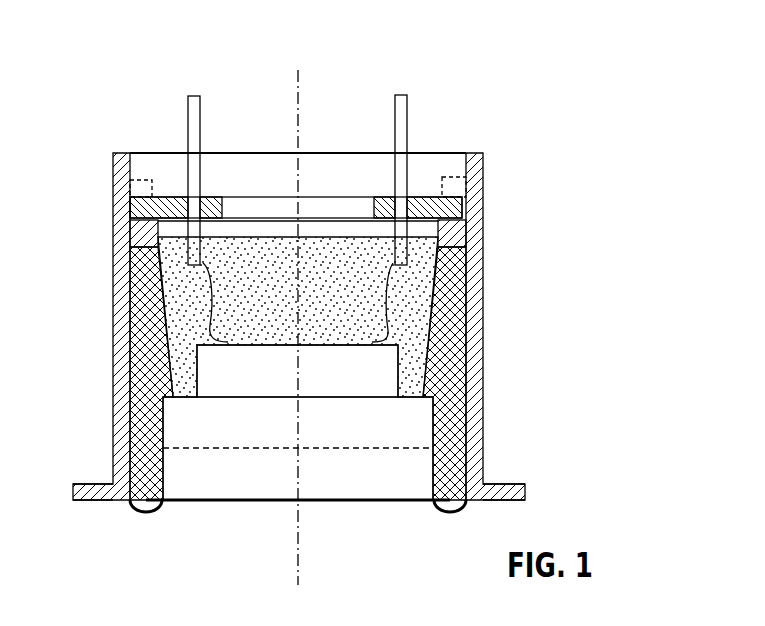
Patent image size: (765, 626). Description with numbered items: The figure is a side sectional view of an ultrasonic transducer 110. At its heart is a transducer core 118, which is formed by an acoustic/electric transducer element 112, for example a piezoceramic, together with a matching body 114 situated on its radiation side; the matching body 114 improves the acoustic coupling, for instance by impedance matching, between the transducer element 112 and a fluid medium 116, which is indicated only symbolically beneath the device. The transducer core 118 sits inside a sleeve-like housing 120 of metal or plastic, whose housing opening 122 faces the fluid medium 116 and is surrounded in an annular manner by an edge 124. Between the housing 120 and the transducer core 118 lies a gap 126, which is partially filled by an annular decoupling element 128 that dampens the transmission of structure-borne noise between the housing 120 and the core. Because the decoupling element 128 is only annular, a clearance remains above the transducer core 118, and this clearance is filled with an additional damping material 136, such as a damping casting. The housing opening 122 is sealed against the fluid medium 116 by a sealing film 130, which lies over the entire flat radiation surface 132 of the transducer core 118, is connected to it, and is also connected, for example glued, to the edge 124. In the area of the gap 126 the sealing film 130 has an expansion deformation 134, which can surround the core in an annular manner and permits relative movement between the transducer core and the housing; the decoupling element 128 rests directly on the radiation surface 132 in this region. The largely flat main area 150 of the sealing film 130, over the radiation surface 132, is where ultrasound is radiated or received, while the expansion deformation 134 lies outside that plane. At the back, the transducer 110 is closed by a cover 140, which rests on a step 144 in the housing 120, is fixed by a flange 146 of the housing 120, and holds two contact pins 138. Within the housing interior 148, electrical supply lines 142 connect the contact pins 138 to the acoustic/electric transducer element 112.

The ultrasonic transducer 110 is at (489, 138).
The acoustic/electric transducer element 112 is at (390, 363).
The matching body 114 is at (422, 422).
The fluid medium 116 is at (364, 578).
The transducer core 118 is at (401, 422).
The housing 120 is at (478, 279).
The housing opening 122 is at (385, 504).
The edge 124 is at (522, 491).
The gap 126 is at (138, 428).
The decoupling element 128 is at (138, 362).
The sealing film 130 is at (187, 502).
The radiation surface 132 is at (275, 502).
The expansion deformation 134 is at (140, 512).
The damping material 136 is at (442, 268).
The contact pins 138 is at (400, 103).
The cover 140 is at (192, 200).
The electrical supply lines 142 is at (400, 303).
The step 144 is at (148, 235).
The flange 146 is at (142, 185).
The housing interior 148 is at (420, 252).
The main area 150 is at (232, 503).